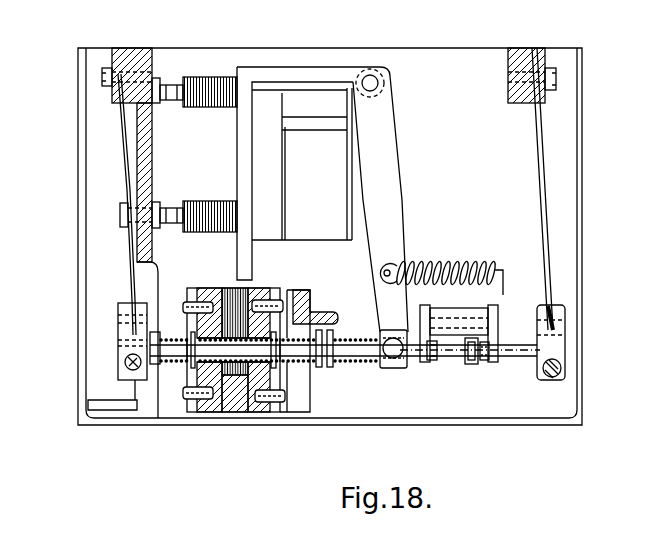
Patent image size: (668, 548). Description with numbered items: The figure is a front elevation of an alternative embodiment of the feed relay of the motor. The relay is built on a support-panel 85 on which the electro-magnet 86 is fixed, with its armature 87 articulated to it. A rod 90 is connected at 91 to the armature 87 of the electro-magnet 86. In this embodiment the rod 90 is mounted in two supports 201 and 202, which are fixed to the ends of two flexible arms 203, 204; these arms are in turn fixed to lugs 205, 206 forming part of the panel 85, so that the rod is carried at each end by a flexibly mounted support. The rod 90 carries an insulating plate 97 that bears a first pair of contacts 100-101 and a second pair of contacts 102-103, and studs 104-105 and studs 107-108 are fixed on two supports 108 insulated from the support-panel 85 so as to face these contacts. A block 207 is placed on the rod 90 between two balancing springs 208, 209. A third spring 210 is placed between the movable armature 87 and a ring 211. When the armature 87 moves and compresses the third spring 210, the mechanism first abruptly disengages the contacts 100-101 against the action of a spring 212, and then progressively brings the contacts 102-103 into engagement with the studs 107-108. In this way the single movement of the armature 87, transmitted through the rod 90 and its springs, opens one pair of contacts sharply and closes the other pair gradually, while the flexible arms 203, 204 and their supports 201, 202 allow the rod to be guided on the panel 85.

The support-panel 85 is at (437, 60).
The electro-magnet 86 is at (301, 140).
The armature 87 is at (388, 162).
The rod 90 is at (518, 343).
The connection of rod to armature 91 is at (398, 362).
The insulating plate 97 is at (477, 363).
The contacts 100-101 is at (483, 353).
The contacts 102-103 is at (465, 360).
The studs 104-105 is at (557, 367).
The studs 107-108 is at (428, 362).
The support 108 is at (450, 308).
The support 201 is at (565, 310).
The support 202 is at (118, 307).
The flexible arm 203 is at (538, 164).
The flexible arm 204 is at (122, 172).
The lug 205 is at (521, 60).
The lug 206 is at (126, 50).
The block 207 is at (220, 402).
The balancing spring 208 is at (172, 362).
The balancing spring 209 is at (293, 364).
The third spring 210 is at (355, 362).
The ring 211 is at (329, 368).
The spring 212 is at (457, 262).